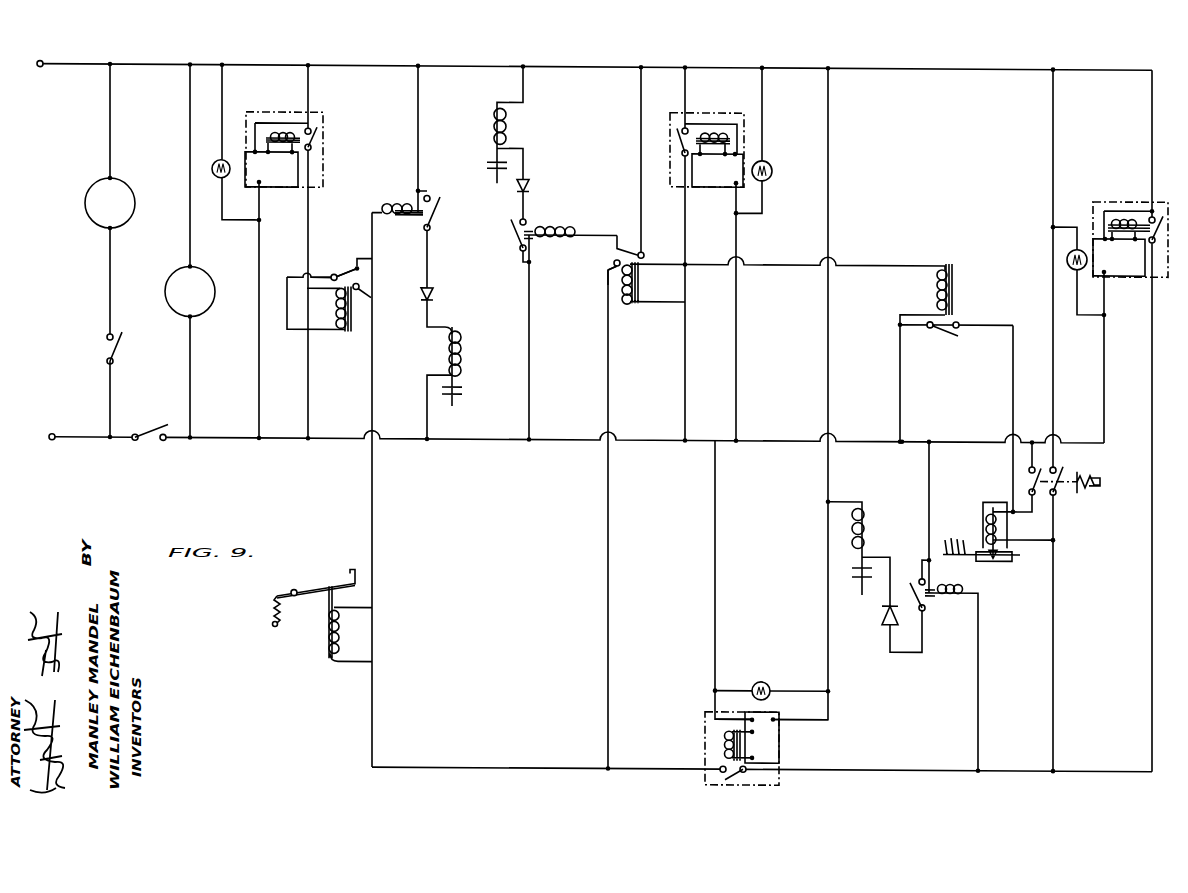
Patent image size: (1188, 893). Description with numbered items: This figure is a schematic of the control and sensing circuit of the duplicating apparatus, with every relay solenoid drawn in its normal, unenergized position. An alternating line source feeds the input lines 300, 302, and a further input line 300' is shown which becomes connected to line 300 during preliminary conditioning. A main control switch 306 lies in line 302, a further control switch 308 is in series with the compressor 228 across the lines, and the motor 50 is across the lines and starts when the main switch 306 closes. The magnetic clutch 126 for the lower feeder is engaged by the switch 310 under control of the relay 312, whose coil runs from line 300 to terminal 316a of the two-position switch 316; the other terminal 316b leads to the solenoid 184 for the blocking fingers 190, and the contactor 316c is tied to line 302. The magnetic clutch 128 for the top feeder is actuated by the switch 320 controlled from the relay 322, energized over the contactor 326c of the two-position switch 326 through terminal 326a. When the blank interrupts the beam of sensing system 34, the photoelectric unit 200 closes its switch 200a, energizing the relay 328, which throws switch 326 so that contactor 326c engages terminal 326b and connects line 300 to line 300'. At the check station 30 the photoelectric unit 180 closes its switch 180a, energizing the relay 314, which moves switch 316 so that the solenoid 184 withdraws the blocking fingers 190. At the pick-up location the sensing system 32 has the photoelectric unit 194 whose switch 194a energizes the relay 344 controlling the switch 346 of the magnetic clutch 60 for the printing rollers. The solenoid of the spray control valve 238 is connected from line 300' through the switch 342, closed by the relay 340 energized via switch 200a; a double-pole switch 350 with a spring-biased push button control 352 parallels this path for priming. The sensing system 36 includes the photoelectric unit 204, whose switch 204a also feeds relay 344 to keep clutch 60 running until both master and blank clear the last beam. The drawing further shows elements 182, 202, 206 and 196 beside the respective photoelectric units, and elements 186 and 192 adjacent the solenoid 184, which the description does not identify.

The input line 300 is at (594, 59).
The input line 302 is at (82, 442).
The further input line 300' is at (762, 784).
The compressor 228 is at (95, 220).
The further control switch 308 is at (121, 349).
The main control switch 306 is at (159, 426).
The motor 50 is at (194, 271).
The indicator lamp 182 is at (215, 180).
The check station 30 is at (329, 111).
The photoelectric unit 180 is at (273, 113).
The switch 180a is at (337, 138).
The relay 314 is at (340, 332).
The two-position switch 316 is at (369, 283).
The terminal 316a is at (356, 262).
The terminal 316b is at (364, 295).
The contactor 316c is at (338, 264).
The relay 312 is at (399, 217).
The switch 310 is at (437, 221).
The magnetic clutch 126 is at (462, 362).
The magnetic clutch 128 is at (491, 139).
The switch 320 is at (517, 243).
The relay 322 is at (556, 227).
The two-position switch 326 is at (599, 269).
The terminal 326a is at (613, 253).
The terminal 326b is at (612, 271).
The contactor 326c is at (638, 253).
The relay 328 is at (640, 289).
The electrical sensing system 34 is at (721, 105).
The photoelectric unit 200 is at (674, 113).
The switch 200a is at (674, 143).
The indicator lamp 202 is at (772, 171).
The magnetic clutch 60 is at (870, 532).
The switch 346 is at (912, 612).
The relay 344 is at (948, 606).
The control valve solenoid 238 is at (985, 521).
The double-pole switch 350 is at (1052, 469).
The spring biased push button control 352 is at (1100, 483).
The relay 340 is at (952, 296).
The switch 342 is at (946, 339).
The indicator lamp 206 is at (1066, 258).
The electrical sensing system 36 is at (1092, 189).
The photoelectric unit 204 is at (1118, 201).
The switch 204a is at (1168, 216).
The indicator lamp 196 is at (766, 684).
The electrical sensing system 32 is at (790, 788).
The photoelectric unit 194 is at (693, 785).
The switch 194a is at (737, 792).
The solenoid control 184 is at (325, 652).
The lever arm 186 is at (308, 587).
The blocking fingers 190 is at (352, 574).
The spring 192 is at (268, 618).